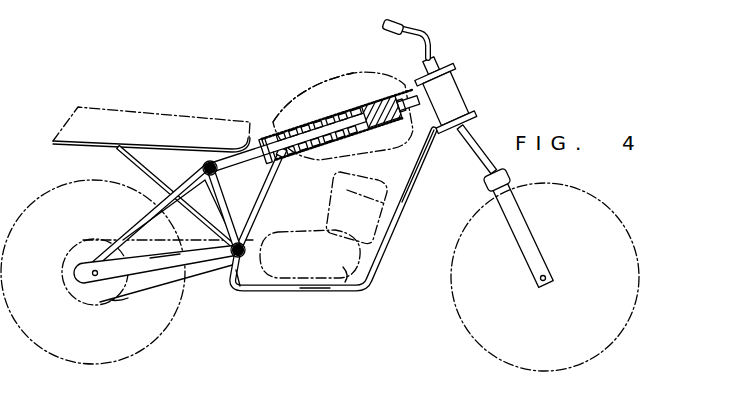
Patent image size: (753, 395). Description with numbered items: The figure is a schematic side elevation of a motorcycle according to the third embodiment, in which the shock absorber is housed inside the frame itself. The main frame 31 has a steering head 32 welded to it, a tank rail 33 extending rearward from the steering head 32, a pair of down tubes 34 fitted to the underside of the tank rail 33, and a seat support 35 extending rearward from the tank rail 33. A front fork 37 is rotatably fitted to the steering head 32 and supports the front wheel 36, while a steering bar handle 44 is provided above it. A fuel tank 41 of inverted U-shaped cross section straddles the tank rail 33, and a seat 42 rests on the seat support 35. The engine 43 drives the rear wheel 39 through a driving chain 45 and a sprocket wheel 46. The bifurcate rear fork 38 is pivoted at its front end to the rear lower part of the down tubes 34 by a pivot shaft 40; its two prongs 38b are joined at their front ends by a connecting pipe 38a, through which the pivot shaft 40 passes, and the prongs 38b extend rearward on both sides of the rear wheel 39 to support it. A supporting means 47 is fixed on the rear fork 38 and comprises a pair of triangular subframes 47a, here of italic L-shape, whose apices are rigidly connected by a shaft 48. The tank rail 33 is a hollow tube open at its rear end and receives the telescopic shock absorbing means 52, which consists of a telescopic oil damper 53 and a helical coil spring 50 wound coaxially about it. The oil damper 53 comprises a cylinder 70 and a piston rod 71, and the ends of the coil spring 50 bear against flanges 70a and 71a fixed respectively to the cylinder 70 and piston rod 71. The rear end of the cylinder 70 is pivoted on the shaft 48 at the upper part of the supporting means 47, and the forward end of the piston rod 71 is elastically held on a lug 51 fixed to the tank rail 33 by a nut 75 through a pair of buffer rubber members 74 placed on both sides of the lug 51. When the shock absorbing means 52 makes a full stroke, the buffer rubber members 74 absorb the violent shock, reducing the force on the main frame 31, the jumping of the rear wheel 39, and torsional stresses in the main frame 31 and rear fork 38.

The main frame 31 is at (320, 292).
The steering head 32 is at (440, 107).
The tank rail 33 is at (322, 104).
The down tubes 34 is at (382, 252).
The seat support 35 is at (86, 144).
The front wheel 36 is at (626, 322).
The front fork 37 is at (526, 252).
The bifurcate rear fork 38 is at (184, 273).
The connecting pipe 38a is at (250, 289).
The prongs 38b is at (143, 268).
The rear wheel 39 is at (22, 330).
The pivot shaft 40 is at (234, 257).
The fuel tank 41 is at (288, 103).
The seat 42 is at (78, 106).
The engine 43 is at (352, 289).
The steering bar handle 44 is at (427, 58).
The driving chain 45 is at (128, 300).
The sprocket wheel 46 is at (65, 283).
The supporting means 47 is at (130, 228).
The triangular subframes 47a is at (253, 220).
The shaft 48 is at (202, 165).
The helical coil spring 50 is at (325, 120).
The lug 51 is at (380, 113).
The telescopic shock absorbing means 52 is at (318, 148).
The telescopic oil damper 53 is at (278, 133).
The cylinder 70 is at (254, 137).
The flange 70a is at (283, 160).
The piston rod 71 is at (333, 122).
The flange 71a is at (360, 110).
The buffer rubber members 74 is at (386, 130).
The nut 75 is at (426, 143).